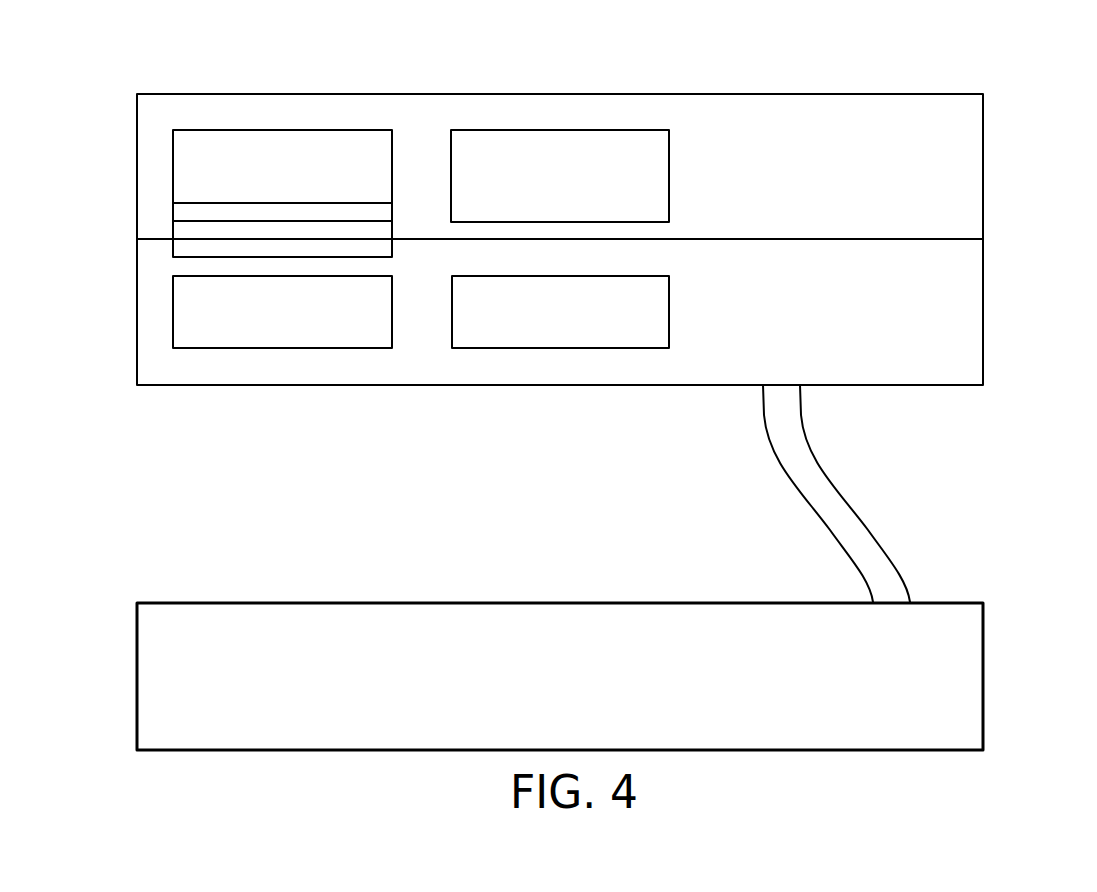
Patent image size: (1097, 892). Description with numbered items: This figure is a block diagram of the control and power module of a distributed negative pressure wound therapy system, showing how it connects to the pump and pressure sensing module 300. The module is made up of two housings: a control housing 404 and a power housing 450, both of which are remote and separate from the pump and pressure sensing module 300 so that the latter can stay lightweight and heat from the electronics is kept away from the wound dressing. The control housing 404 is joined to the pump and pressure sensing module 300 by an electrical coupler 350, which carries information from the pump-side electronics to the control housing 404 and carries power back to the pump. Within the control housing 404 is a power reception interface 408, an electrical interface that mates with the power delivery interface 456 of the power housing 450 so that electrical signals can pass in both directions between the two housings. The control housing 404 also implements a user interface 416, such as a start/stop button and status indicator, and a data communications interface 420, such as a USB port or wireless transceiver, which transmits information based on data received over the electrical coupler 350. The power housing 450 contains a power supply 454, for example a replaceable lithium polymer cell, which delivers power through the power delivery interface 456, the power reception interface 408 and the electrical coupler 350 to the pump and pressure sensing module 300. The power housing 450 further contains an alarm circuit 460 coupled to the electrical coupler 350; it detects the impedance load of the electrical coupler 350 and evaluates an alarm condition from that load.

The pump and pressure sensing module 300 is at (983, 675).
The electrical coupler 350 is at (906, 509).
The control housing 404 is at (983, 312).
The power reception interface 408 is at (283, 238).
The user interface 416 is at (173, 312).
The data communications interface 420 is at (562, 349).
The power housing 450 is at (983, 165).
The power supply 454 is at (173, 175).
The power delivery interface 456 is at (348, 202).
The alarm circuit 460 is at (558, 130).